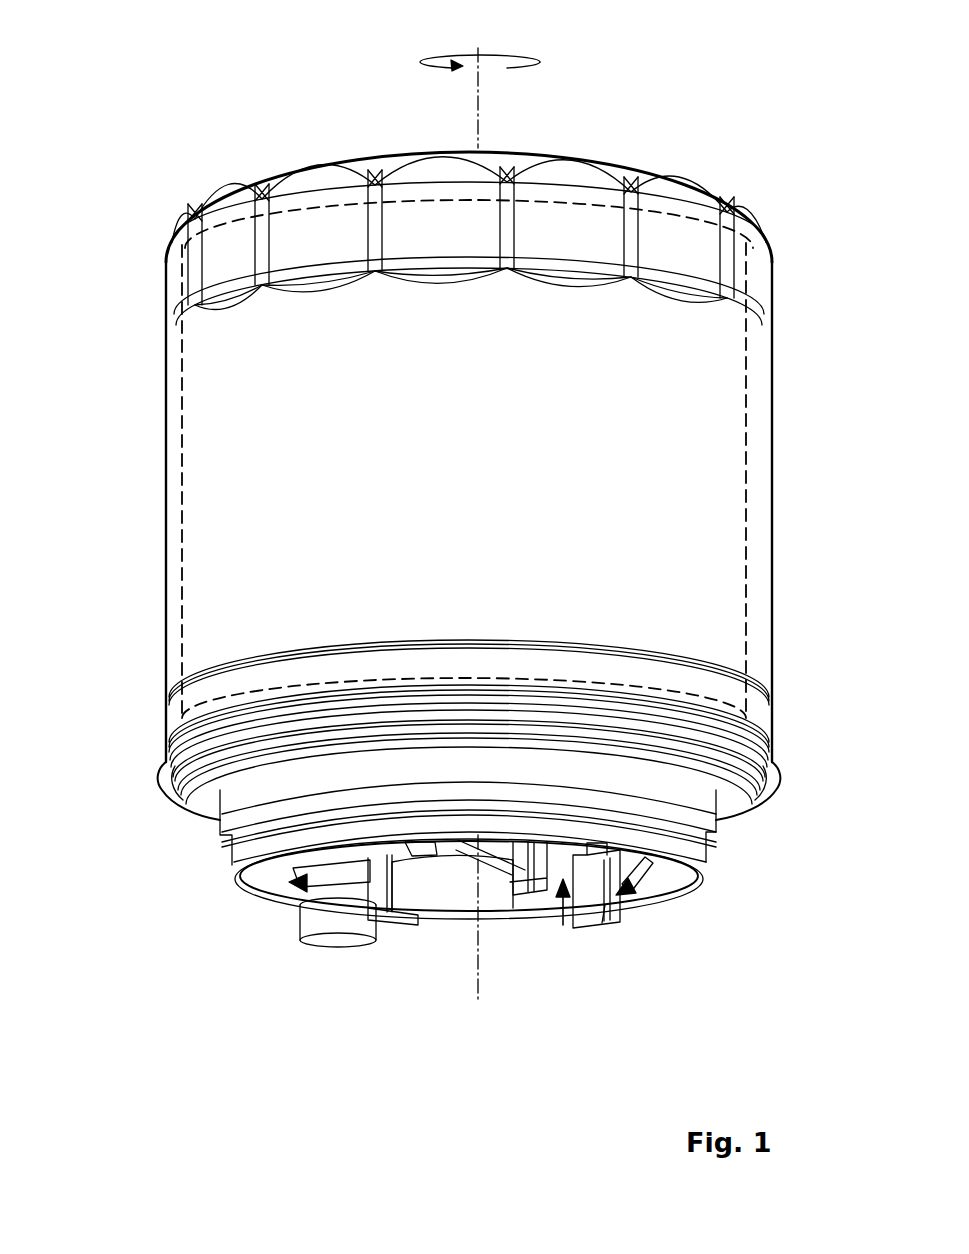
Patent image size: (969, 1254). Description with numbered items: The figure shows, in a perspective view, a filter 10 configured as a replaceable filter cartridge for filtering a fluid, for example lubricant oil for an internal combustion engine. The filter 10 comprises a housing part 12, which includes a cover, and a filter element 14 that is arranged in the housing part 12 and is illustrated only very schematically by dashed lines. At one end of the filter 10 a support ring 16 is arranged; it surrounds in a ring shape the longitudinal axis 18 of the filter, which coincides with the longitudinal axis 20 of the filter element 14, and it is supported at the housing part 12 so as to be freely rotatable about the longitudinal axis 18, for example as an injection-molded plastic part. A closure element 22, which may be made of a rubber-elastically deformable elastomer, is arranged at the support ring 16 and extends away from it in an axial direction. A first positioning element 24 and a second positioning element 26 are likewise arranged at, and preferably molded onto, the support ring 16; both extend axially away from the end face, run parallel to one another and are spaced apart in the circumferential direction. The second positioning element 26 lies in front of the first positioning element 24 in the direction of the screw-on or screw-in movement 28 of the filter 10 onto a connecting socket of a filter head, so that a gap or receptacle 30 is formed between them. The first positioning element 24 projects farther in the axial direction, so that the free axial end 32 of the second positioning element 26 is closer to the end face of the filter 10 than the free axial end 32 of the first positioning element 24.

The filter 10 is at (727, 113).
The housing part 12 is at (764, 500).
The filter element 14 is at (183, 467).
The support ring 16 is at (437, 893).
The longitudinal axis 18 is at (482, 85).
The longitudinal axis 20 is at (478, 983).
The closure element 22 is at (335, 943).
The first positioning element 24 is at (597, 905).
The second positioning element 26 is at (535, 890).
The screw-on or screw-in movement 28 is at (540, 60).
The gap or receptacle 30 is at (563, 928).
The free axial end 32 is at (532, 888).